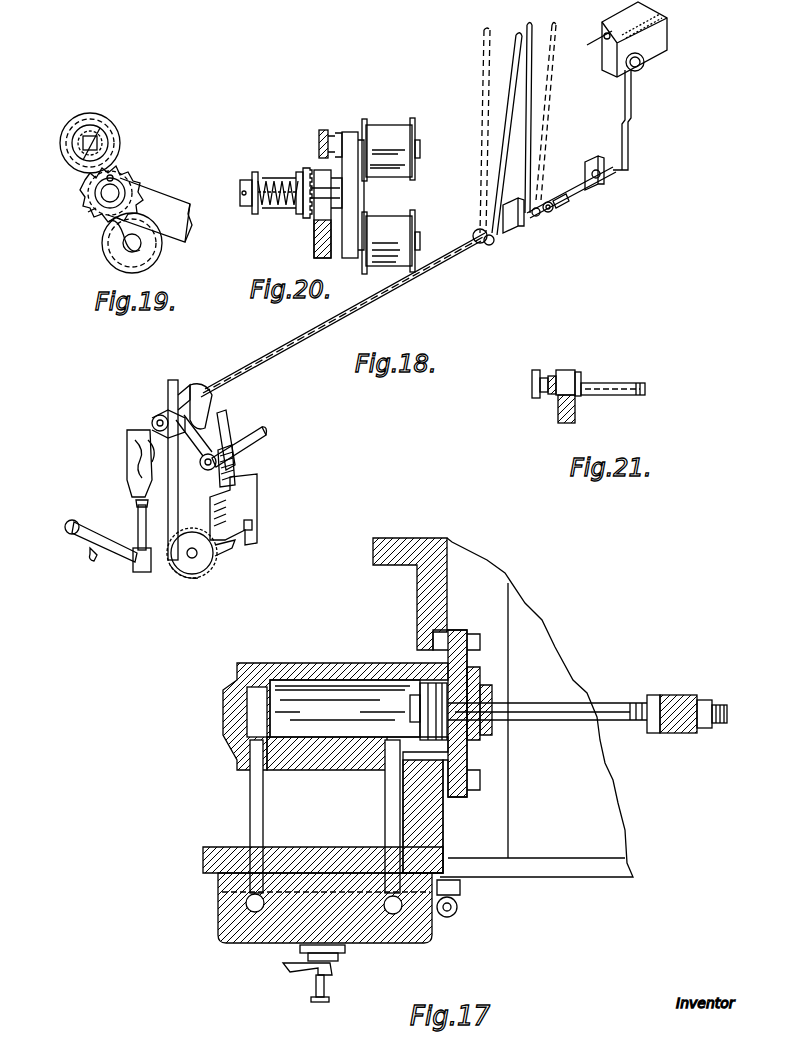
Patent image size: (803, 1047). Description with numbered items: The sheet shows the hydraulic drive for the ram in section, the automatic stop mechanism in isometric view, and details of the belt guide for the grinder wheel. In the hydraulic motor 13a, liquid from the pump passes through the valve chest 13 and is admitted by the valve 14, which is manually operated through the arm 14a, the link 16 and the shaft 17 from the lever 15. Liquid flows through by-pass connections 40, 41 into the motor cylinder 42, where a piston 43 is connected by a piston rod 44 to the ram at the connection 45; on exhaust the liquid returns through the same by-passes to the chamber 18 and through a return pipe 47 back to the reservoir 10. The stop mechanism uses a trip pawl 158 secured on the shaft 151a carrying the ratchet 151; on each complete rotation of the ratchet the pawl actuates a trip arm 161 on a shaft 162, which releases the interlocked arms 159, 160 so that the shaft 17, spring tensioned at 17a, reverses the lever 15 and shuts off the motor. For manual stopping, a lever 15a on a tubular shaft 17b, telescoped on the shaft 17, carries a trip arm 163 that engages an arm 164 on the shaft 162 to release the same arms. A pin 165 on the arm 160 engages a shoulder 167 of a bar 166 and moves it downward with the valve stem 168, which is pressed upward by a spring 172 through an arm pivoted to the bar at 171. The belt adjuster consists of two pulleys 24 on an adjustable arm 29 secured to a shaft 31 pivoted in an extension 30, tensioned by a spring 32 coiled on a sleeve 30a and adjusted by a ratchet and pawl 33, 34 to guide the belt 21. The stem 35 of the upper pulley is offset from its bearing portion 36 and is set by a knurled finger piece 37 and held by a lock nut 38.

In FIG. 17, the reservoir 10 is at (503, 707).
In FIG. 18, the valve chest 13 is at (667, 22).
In FIG. 17, the hydraulic motor 13a is at (308, 663).
In FIG. 18, the valve 14 is at (645, 63).
In FIG. 17, the arm 14a is at (296, 975).
In FIG. 18, the lever 15 is at (530, 101).
In FIG. 18, the lever 15a is at (495, 157).
In FIG. 18, the link 16 is at (632, 97).
In FIG. 18, the shaft 17 is at (570, 185).
In FIG. 18, the spring tension 17a is at (548, 212).
In FIG. 18, the tubular shaft 17b is at (404, 290).
In FIG. 17, the chamber 18 is at (290, 920).
In FIG. 19, the belt 21 is at (115, 130).
In FIG. 19, the belt adjuster pulleys 24 is at (62, 135).
In FIG. 20, the belt adjuster pulleys 24 is at (383, 125).
In FIG. 19, the adjustable arm 29 is at (105, 147).
In FIG. 20, the adjustable arm 29 is at (352, 170).
In FIG. 20, the extension 30 is at (314, 245).
In FIG. 19, the sleeve 30a is at (88, 212).
In FIG. 20, the sleeve 30a is at (258, 205).
In FIG. 19, the shaft 31 is at (120, 187).
In FIG. 20, the shaft 31 is at (268, 178).
In FIG. 20, the spring 32 is at (287, 178).
In FIG. 19, the ratchet 33 is at (80, 190).
In FIG. 20, the ratchet 33 is at (302, 170).
In FIG. 19, the pawl 34 is at (160, 202).
In FIG. 20, the pawl 34 is at (298, 212).
In FIG. 21, the stem 35 is at (620, 383).
In FIG. 21, the bearing portion 36 is at (566, 370).
In FIG. 20, the knurled finger piece 37 is at (323, 130).
In FIG. 21, the knurled finger piece 37 is at (548, 374).
In FIG. 20, the lock nut 38 is at (340, 132).
In FIG. 21, the lock nut 38 is at (556, 406).
In FIG. 17, the by-pass connection 40 is at (246, 903).
In FIG. 17, the by-pass connection 41 is at (250, 808).
In FIG. 17, the motor cylinder 42 is at (345, 708).
In FIG. 17, the piston 43 is at (418, 723).
In FIG. 17, the piston rod 44 is at (608, 703).
In FIG. 17, the connection to ram 45 is at (680, 695).
In FIG. 17, the return pipe 47 is at (460, 906).
In FIG. 18, the ratchet 151 is at (215, 575).
In FIG. 18, the shaft 151a is at (186, 575).
In FIG. 18, the trip pawl 158 is at (258, 500).
In FIG. 18, the arm 159 is at (205, 470).
In FIG. 18, the arm 160 is at (168, 400).
In FIG. 18, the trip arm 161 is at (236, 473).
In FIG. 18, the shaft 162 is at (263, 432).
In FIG. 18, the trip arm 163 is at (210, 400).
In FIG. 18, the arm 164 is at (233, 420).
In FIG. 18, the pin 165 is at (155, 418).
In FIG. 18, the bar 166 is at (180, 390).
In FIG. 18, the shoulder 167 is at (150, 432).
In FIG. 18, the valve stem 168 is at (138, 520).
In FIG. 18, the pivotal connection 171 is at (75, 520).
In FIG. 18, the spring 172 is at (88, 555).